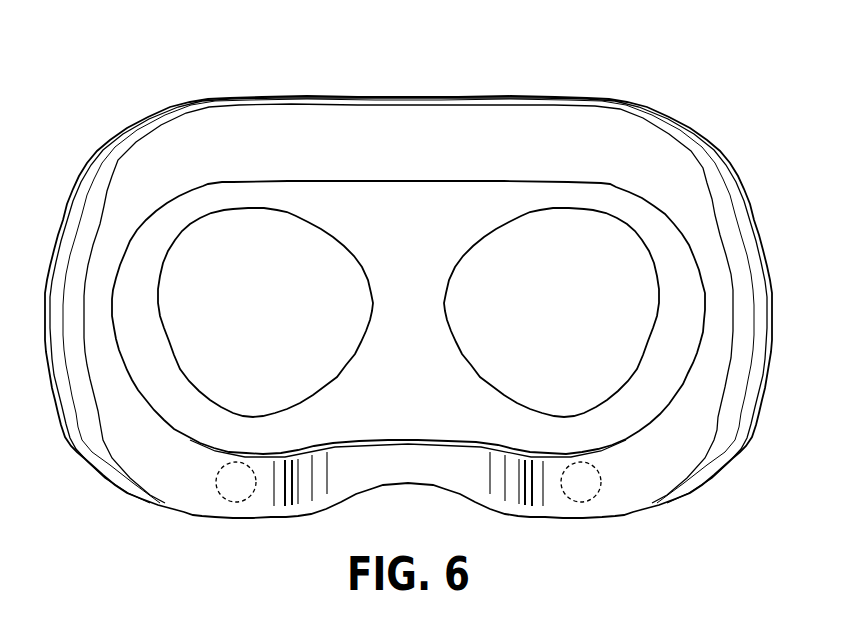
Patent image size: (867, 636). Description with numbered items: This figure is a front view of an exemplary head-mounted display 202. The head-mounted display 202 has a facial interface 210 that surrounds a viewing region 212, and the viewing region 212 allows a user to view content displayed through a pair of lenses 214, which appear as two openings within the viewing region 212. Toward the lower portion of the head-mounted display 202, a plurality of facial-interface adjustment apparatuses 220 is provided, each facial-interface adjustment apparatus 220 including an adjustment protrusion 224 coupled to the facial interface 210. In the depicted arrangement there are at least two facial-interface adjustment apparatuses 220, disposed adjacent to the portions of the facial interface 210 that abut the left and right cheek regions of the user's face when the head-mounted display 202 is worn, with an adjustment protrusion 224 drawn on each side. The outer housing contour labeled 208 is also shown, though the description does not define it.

The head-mounted display 202 is at (58, 127).
The housing 208 is at (757, 125).
The facial interface 210 is at (110, 487).
The viewing region 212 is at (668, 237).
The lenses 214 is at (290, 213).
The facial-interface adjustment apparatus 220 is at (215, 528).
The adjustment protrusion 224 is at (248, 500).